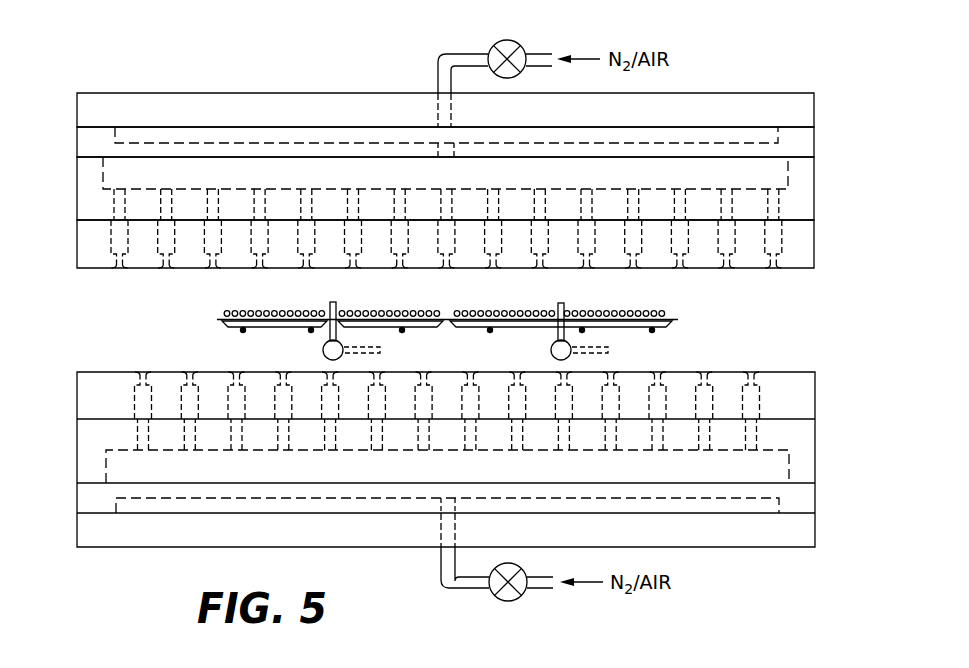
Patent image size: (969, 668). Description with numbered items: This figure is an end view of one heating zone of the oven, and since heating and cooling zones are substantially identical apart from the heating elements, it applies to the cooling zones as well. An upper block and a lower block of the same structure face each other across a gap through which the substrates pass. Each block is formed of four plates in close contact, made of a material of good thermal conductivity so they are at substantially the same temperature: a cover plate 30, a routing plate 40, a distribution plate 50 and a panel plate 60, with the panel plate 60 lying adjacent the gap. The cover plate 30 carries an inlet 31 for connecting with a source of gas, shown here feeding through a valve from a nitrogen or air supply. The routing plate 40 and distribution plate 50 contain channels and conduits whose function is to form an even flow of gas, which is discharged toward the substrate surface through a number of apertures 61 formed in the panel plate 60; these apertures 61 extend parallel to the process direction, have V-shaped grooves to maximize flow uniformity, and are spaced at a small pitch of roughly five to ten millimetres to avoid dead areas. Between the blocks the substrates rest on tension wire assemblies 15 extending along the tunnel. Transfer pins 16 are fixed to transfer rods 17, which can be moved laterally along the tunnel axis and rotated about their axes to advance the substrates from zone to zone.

The tension wire assembly 15 is at (243, 334).
The transfer pin 16 is at (330, 305).
The transfer rod 17 is at (322, 352).
The cover plate 30 is at (803, 113).
The inlet 31 is at (442, 110).
The routing plate 40 is at (803, 142).
The distribution plate 50 is at (803, 200).
The panel plate 60 is at (803, 243).
The aperture 61 is at (773, 270).